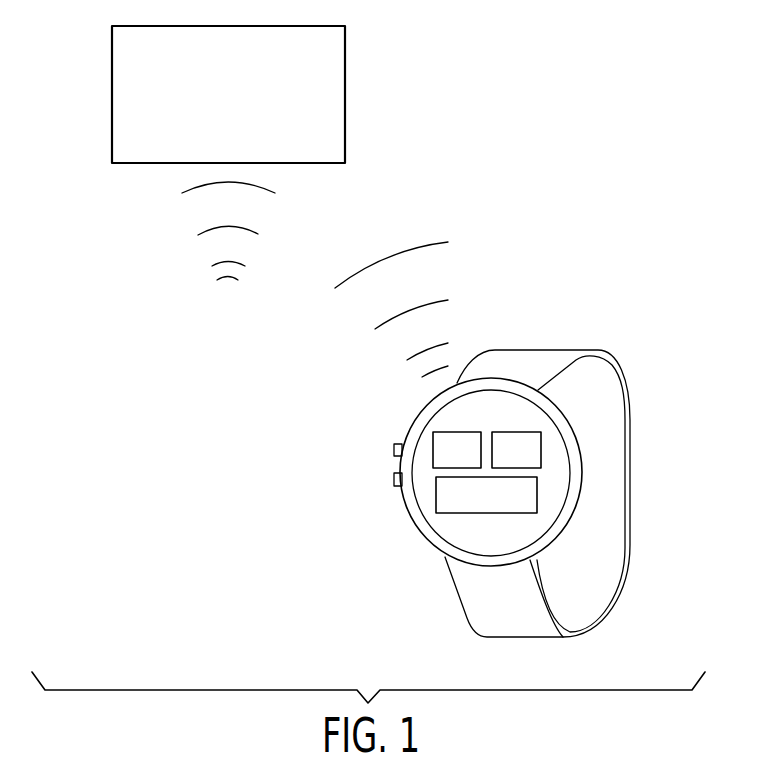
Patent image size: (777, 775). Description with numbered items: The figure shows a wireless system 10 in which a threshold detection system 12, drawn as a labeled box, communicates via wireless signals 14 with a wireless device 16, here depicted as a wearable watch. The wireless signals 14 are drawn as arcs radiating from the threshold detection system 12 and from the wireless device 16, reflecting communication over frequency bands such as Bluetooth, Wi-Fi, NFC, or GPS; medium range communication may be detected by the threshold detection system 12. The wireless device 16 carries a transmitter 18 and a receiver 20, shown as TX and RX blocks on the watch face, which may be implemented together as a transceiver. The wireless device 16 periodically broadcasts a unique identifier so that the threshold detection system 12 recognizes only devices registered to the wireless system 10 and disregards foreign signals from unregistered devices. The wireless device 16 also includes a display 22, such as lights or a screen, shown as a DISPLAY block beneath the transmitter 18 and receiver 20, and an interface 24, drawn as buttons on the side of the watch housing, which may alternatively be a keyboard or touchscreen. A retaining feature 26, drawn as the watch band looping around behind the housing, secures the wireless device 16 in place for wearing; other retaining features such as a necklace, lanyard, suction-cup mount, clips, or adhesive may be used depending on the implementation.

The wireless system 10 is at (588, 206).
The threshold detection system 12 is at (345, 91).
The wireless signals 14 is at (213, 248).
The wireless device 16 is at (411, 527).
The transmitter 18 is at (455, 432).
The receiver 20 is at (541, 450).
The display 22 is at (490, 513).
The interface 24 is at (394, 452).
The retaining feature 26 is at (625, 590).